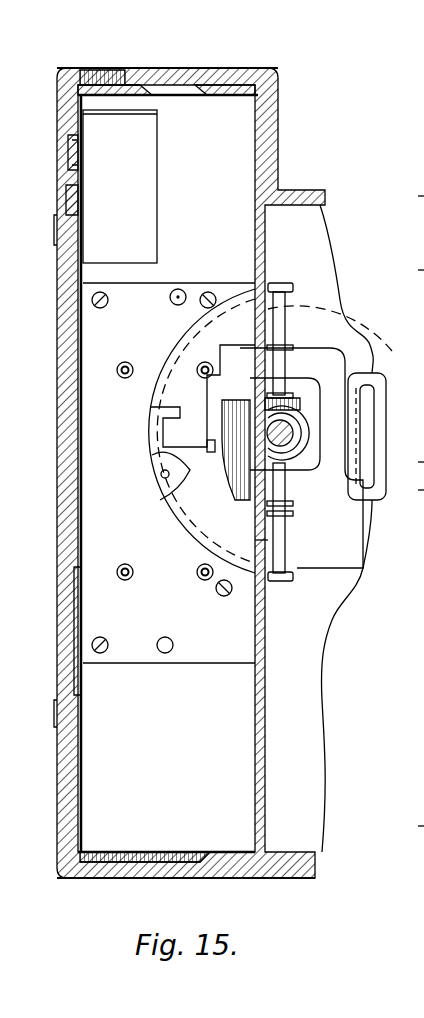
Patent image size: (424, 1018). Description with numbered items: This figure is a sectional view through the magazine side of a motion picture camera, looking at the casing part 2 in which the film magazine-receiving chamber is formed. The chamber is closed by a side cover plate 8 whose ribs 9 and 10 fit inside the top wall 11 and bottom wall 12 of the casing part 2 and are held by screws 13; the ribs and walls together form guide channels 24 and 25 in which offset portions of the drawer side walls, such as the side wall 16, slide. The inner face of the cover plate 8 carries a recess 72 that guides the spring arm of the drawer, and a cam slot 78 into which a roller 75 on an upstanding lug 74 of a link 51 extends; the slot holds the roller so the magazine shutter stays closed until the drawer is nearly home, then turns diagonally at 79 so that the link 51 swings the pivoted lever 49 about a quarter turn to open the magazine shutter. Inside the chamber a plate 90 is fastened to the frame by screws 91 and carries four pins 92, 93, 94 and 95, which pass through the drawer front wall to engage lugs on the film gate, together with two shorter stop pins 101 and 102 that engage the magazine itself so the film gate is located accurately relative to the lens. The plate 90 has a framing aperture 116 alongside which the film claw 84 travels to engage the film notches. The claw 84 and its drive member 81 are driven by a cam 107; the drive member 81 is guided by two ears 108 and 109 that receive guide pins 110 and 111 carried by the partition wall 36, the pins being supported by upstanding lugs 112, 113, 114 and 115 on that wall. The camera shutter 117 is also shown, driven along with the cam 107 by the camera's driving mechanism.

The casing part 2 is at (280, 115).
The side cover plate 8 is at (60, 330).
The rib 9 is at (117, 85).
The rib 10 is at (76, 846).
The top wall 11 is at (193, 70).
The bottom wall 12 is at (205, 878).
The screws 13 is at (90, 68).
The side wall 16 is at (414, 826).
The guide channel 24 is at (152, 92).
The guide channel 25 is at (158, 878).
The partition wall 36 is at (338, 292).
The pivoted lever 49 is at (414, 490).
The link 51 is at (414, 462).
The recess 72 is at (73, 632).
The upstanding lug 74 is at (412, 270).
The roller 75 is at (411, 198).
The cam slot 78 is at (68, 152).
The diagonal portion of cam slot 79 is at (66, 197).
The drive member 81 is at (238, 410).
The film claw 84 is at (206, 446).
The plate 90 is at (88, 425).
The screws 91 is at (94, 298).
The pin 92 is at (200, 363).
The pin 93 is at (125, 362).
The pin 94 is at (118, 570).
The pin 95 is at (198, 567).
The stop pin 101 is at (178, 289).
The stop pin 102 is at (165, 653).
The cam 107 is at (310, 460).
The ear 108 is at (285, 395).
The ear 109 is at (290, 470).
The guide pin 110 is at (270, 328).
The guide pin 111 is at (268, 545).
The upstanding lug 112 is at (290, 345).
The upstanding lug 113 is at (290, 290).
The upstanding lug 114 is at (287, 518).
The upstanding lug 115 is at (283, 582).
The framing aperture 116 is at (148, 407).
The camera shutter 117 is at (375, 352).